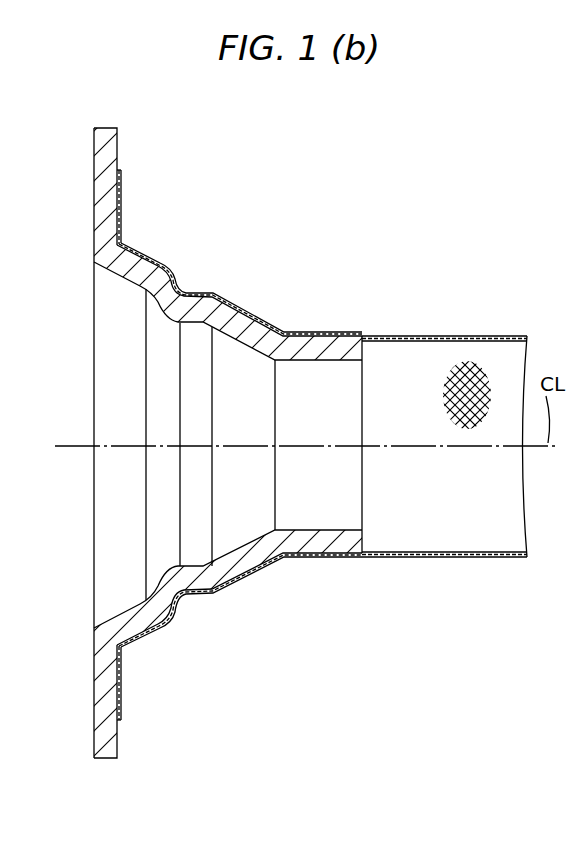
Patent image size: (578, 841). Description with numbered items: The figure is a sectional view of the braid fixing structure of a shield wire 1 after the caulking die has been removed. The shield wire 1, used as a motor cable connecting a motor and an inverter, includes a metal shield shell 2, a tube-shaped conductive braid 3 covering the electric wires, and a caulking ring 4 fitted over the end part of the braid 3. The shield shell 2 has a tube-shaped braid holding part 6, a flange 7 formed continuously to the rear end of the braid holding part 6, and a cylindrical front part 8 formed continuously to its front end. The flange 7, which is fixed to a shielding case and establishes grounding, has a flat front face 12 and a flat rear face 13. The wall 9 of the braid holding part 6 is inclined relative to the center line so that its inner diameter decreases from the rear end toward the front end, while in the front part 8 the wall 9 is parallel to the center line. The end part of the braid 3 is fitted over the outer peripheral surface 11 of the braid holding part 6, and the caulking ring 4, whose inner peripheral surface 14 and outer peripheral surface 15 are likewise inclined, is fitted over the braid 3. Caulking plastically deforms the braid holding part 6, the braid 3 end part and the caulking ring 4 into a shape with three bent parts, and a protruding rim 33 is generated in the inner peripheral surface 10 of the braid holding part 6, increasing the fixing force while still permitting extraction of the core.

The shield wire 1 is at (405, 225).
The shield shell 2 is at (108, 124).
The braid 3 is at (464, 335).
The caulking ring 4 is at (240, 299).
The braid holding part 6 is at (230, 584).
The flange 7 is at (105, 732).
The front part 8 is at (343, 540).
The wall 9 is at (250, 326).
The inner peripheral surface 10 is at (230, 525).
The outer peripheral surface 11 is at (250, 573).
The front face 12 is at (118, 149).
The rear face 13 is at (94, 168).
The inner peripheral surface 14 is at (145, 600).
The outer peripheral surface 15 is at (165, 628).
The protruding rim 33 is at (168, 583).